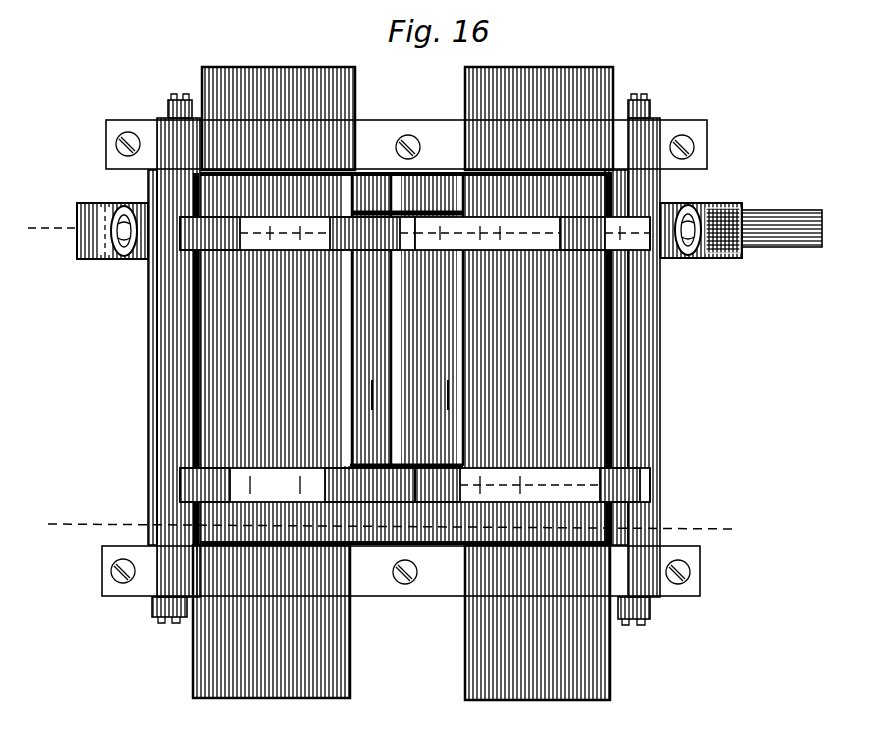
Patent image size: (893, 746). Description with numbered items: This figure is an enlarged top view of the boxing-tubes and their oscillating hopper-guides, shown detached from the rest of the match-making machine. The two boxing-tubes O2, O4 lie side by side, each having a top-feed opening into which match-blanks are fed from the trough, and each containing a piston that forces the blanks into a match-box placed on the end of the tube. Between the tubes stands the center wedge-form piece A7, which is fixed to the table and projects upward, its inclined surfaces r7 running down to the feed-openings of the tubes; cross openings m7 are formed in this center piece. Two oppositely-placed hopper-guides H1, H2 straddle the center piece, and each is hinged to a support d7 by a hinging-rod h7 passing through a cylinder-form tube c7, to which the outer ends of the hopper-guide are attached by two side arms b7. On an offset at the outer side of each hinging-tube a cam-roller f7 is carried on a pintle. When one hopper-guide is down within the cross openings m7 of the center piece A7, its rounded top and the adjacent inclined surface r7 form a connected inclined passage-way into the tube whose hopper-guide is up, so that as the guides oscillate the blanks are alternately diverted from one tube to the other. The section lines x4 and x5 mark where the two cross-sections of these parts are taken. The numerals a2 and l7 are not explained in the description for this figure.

The boxing-tube O2 is at (274, 382).
The boxing-tube O4 is at (539, 383).
The support d7 is at (163, 121).
The hinging-rod h7 is at (182, 99).
The cylinder-form tube c7 is at (404, 357).
The armature core a2 is at (402, 359).
The center wedge-form piece A7 is at (403, 321).
The inclined surfaces of the center piece r7 is at (405, 395).
The cross openings of the center piece m7 is at (452, 215).
The hopper-guide H1 is at (297, 359).
The hopper-guide H2 is at (532, 359).
The bar end l7 is at (407, 367).
The side arms of the hopper-guide b7 is at (141, 204).
The cam-roller f7 is at (118, 258).
The section line x4 x4 is at (414, 228).
The section line x5 x5 is at (406, 526).